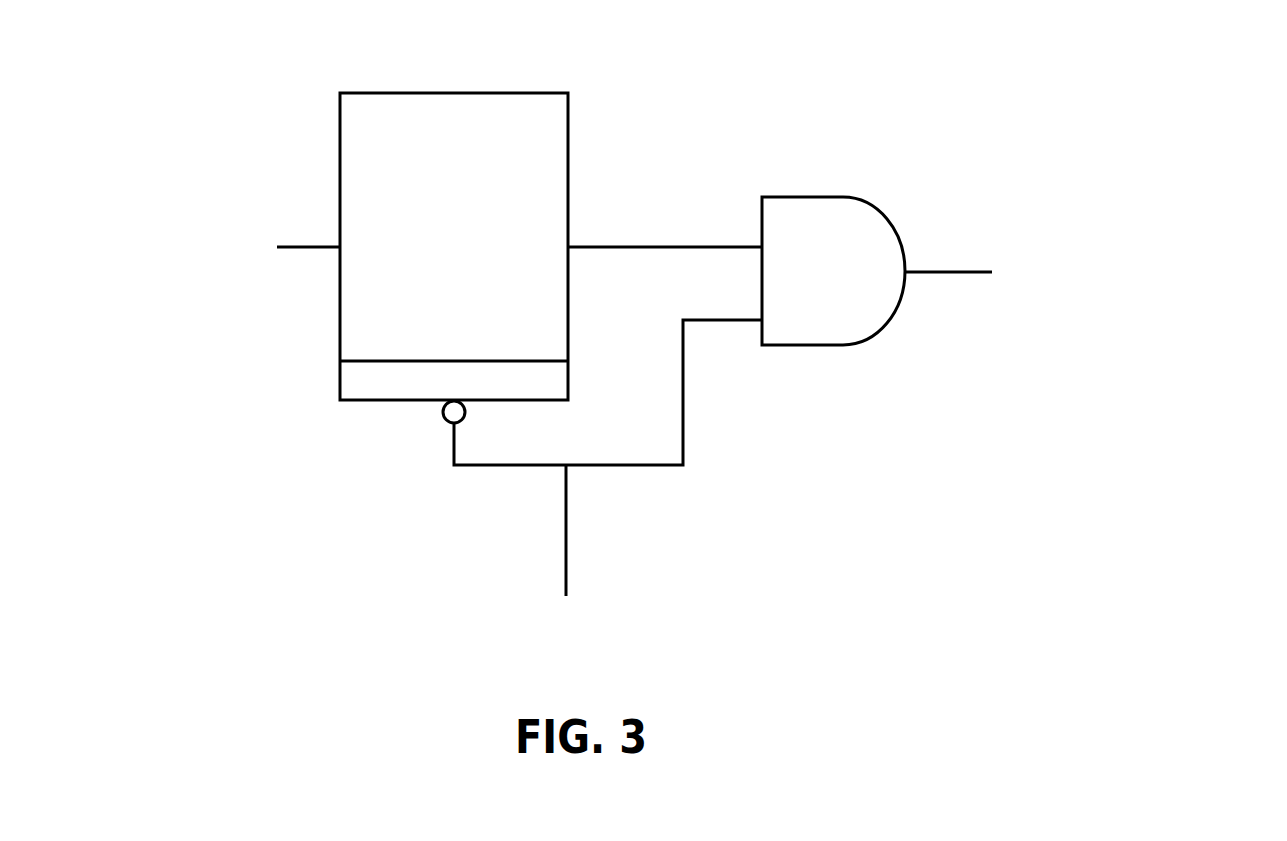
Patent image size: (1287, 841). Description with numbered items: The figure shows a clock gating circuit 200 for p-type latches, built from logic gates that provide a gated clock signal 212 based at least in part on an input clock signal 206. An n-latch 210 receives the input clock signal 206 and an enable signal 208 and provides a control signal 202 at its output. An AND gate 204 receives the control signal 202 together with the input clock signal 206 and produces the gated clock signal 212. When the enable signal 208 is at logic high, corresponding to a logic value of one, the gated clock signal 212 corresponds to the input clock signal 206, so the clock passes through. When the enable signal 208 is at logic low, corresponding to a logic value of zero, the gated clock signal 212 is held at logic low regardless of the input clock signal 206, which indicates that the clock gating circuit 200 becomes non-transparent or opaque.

The clock gating circuit 200 is at (689, 347).
The control signal 202 is at (665, 208).
The AND gate 204 is at (831, 234).
The input clock signal 206 is at (608, 499).
The enable signal 208 is at (221, 224).
The n-latch 210 is at (454, 219).
The gated clock signal 212 is at (1091, 245).